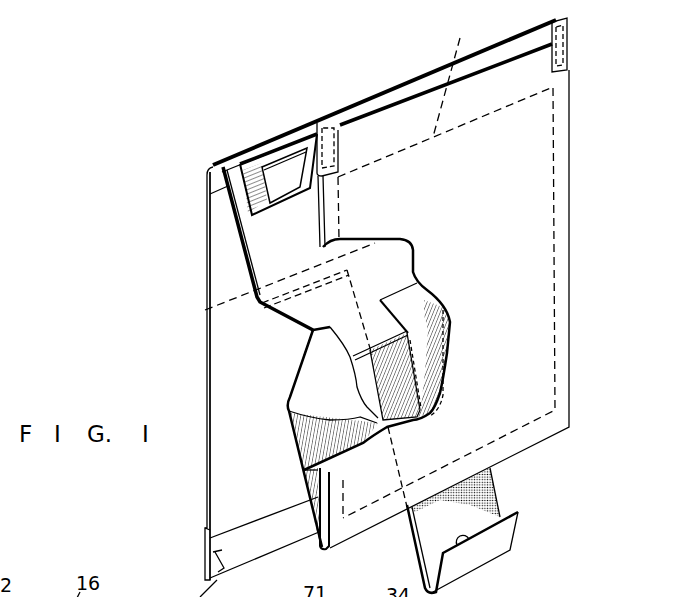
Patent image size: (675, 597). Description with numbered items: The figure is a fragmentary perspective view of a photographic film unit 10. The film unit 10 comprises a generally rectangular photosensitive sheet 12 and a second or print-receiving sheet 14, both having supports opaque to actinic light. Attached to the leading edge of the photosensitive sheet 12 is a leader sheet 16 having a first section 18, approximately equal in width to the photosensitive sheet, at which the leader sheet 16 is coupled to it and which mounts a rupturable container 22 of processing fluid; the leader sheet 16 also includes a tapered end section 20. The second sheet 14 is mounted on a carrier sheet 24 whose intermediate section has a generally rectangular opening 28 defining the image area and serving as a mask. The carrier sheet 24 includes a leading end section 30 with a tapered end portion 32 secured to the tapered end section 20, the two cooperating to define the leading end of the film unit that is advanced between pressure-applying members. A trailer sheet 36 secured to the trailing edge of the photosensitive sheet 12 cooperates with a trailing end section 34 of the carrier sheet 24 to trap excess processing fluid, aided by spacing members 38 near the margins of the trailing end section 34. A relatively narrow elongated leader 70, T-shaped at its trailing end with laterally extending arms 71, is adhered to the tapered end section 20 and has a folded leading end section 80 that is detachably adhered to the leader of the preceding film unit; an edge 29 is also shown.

The film unit 10 is at (180, 167).
The photosensitive sheet 12 is at (258, 393).
The second sheet 14 is at (469, 191).
The leader sheet 16 is at (247, 268).
The first section 18 is at (290, 245).
The tapered end section 20 is at (339, 315).
The rupturable container 22 is at (275, 172).
The carrier sheet 24 is at (295, 463).
The rectangular opening 28 is at (453, 77).
The flange edge 29 is at (305, 475).
The leading end section 30 is at (339, 402).
The tapered end portion 32 is at (318, 351).
The trailing end section 34 is at (372, 103).
The trailer sheet 36 is at (268, 552).
The spacing members 38 is at (312, 128).
The leader 70 is at (497, 488).
The laterally extending arms 71 is at (279, 282).
The leading end section 80 is at (505, 533).